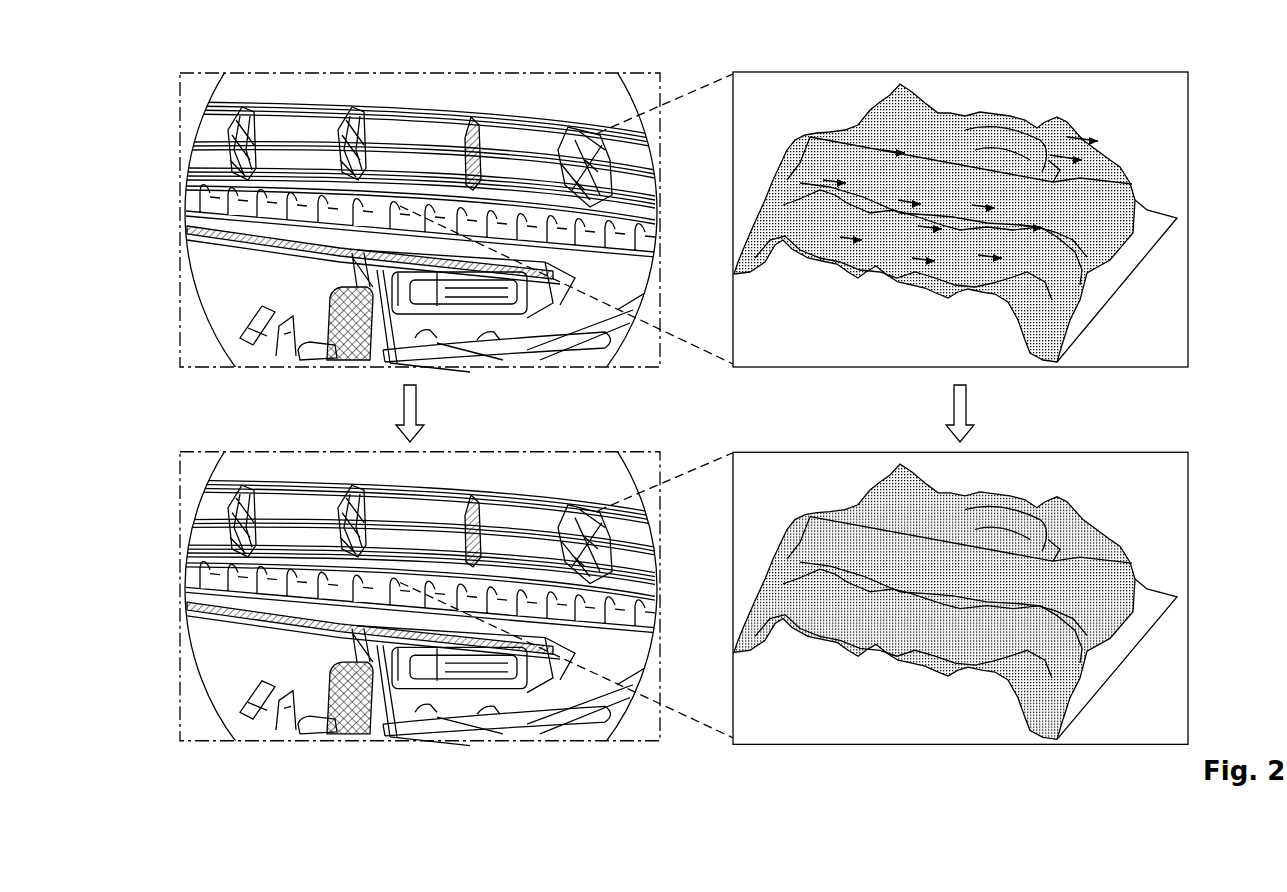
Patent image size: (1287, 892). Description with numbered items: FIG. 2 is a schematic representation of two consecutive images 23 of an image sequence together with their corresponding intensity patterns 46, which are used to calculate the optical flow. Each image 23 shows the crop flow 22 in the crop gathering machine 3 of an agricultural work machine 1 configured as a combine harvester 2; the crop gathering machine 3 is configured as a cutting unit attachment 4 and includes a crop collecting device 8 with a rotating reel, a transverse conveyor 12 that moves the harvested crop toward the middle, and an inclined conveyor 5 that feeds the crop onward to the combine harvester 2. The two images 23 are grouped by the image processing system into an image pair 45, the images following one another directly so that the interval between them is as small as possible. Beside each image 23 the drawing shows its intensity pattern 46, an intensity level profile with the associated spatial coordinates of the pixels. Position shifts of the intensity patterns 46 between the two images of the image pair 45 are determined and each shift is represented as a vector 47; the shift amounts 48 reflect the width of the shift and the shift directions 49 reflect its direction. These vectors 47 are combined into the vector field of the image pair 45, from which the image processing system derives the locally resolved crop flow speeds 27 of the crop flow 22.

The agricultural work machine 1 is at (427, 417).
The combine harvester 2 is at (265, 322).
The crop gathering machine 3 is at (376, 351).
The cutting unit attachment 4 is at (186, 170).
The inclined conveyor 5 is at (514, 293).
The crop collecting device 8 is at (217, 138).
The transverse conveyor 12 is at (214, 203).
The crop flow 22 is at (420, 334).
The images 23 is at (257, 540).
The crop flow speeds 27 is at (306, 194).
The image pair 45 is at (316, 376).
The intensity pattern 46 is at (854, 375).
The vector 47 is at (960, 145).
The shift amounts 48 is at (960, 145).
The shift directions 49 is at (917, 150).